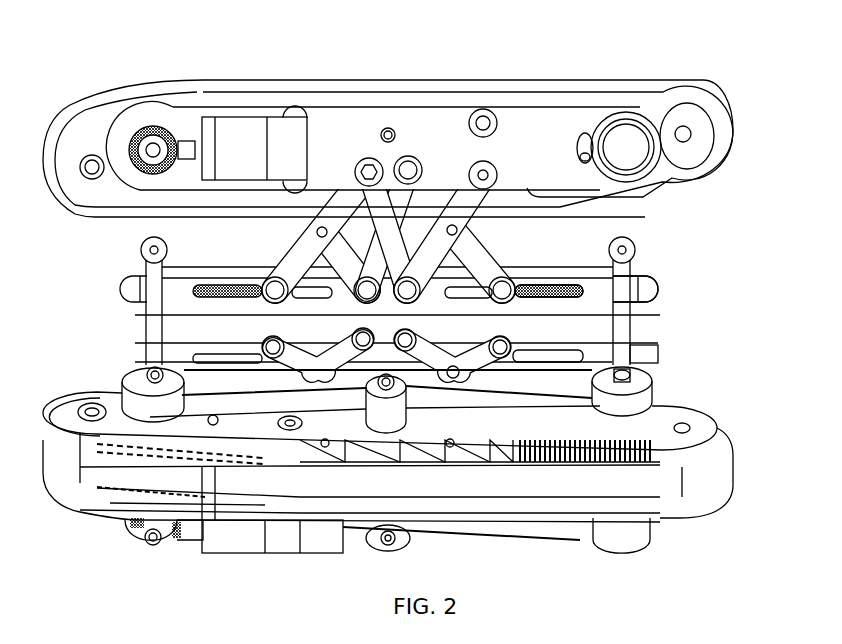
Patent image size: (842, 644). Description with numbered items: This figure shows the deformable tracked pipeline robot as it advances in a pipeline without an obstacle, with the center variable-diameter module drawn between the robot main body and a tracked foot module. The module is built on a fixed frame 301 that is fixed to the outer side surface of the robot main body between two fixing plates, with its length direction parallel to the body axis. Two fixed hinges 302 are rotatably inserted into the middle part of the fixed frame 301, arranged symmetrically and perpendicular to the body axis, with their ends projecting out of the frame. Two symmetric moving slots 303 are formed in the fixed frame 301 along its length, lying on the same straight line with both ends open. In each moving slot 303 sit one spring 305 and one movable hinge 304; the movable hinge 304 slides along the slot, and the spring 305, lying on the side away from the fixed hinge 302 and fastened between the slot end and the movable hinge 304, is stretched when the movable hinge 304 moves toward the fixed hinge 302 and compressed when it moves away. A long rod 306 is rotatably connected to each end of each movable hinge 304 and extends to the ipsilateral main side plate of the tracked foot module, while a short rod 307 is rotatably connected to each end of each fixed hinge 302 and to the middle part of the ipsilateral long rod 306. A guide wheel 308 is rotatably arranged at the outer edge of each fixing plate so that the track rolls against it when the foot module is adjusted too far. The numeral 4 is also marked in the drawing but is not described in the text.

The fixed frame 301 is at (600, 301).
The fixed hinge 302 is at (417, 294).
The moving slot 303 is at (463, 288).
The movable hinge 304 is at (505, 287).
The spring 305 is at (582, 288).
The long rod 306 is at (428, 255).
The short rod 307 is at (430, 197).
The guide wheel 308 is at (640, 244).
The belt drive 4 is at (621, 402).